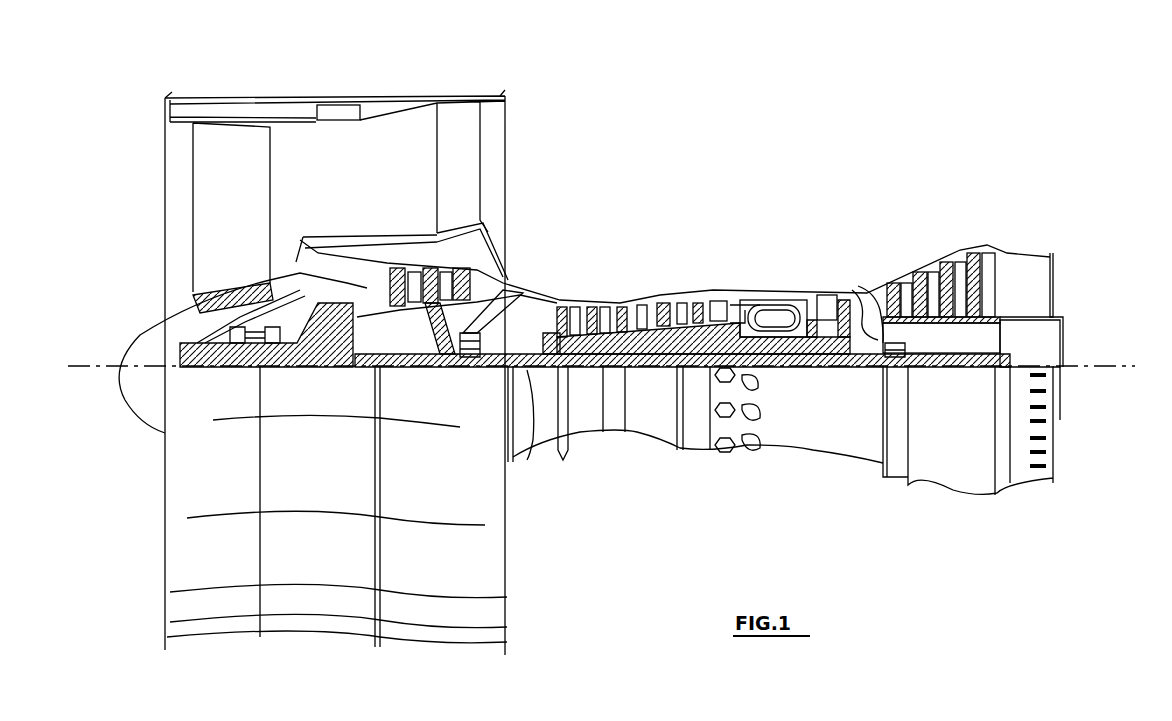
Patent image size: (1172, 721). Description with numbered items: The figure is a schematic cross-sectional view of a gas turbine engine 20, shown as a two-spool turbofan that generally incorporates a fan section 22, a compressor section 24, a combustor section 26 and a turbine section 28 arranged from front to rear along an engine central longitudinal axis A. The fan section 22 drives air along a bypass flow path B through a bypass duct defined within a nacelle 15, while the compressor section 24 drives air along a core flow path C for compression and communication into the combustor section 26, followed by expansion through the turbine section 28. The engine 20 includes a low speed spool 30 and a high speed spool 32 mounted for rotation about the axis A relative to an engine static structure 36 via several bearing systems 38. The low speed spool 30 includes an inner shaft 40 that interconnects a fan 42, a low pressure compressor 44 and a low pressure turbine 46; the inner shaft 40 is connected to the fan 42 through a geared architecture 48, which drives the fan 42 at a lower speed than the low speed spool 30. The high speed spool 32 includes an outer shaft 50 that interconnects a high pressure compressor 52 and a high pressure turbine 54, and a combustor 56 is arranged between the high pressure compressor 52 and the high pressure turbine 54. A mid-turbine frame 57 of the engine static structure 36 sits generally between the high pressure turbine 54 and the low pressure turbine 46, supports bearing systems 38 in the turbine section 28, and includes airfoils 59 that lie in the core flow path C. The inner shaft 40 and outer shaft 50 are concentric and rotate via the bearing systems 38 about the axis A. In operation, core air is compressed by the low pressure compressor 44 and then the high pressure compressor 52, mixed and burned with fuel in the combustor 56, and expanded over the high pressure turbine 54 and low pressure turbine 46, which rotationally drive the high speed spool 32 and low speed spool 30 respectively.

The gas turbine engine 20 is at (775, 148).
The fan section 22 is at (270, 90).
The nacelle 15 is at (340, 100).
The fan 42 is at (231, 207).
The compressor section 24 is at (552, 277).
The combustor section 26 is at (765, 268).
The turbine section 28 is at (900, 238).
The low speed spool 30 is at (655, 372).
The high speed spool 32 is at (697, 305).
The engine static structure 36 is at (693, 452).
The bearing systems 38 is at (472, 357).
The inner shaft 40 is at (530, 450).
The low pressure compressor 44 is at (445, 268).
The low pressure turbine 46 is at (940, 275).
The geared architecture 48 is at (340, 355).
The outer shaft 50 is at (775, 366).
The high pressure compressor 52 is at (625, 300).
The high pressure turbine 54 is at (830, 296).
The combustor 56 is at (765, 313).
The mid-turbine frame 57 is at (868, 283).
The airfoils 59 is at (905, 332).
The engine central longitudinal axis A is at (1138, 366).
The bypass flow path B is at (300, 170).
The core flow path C is at (333, 272).